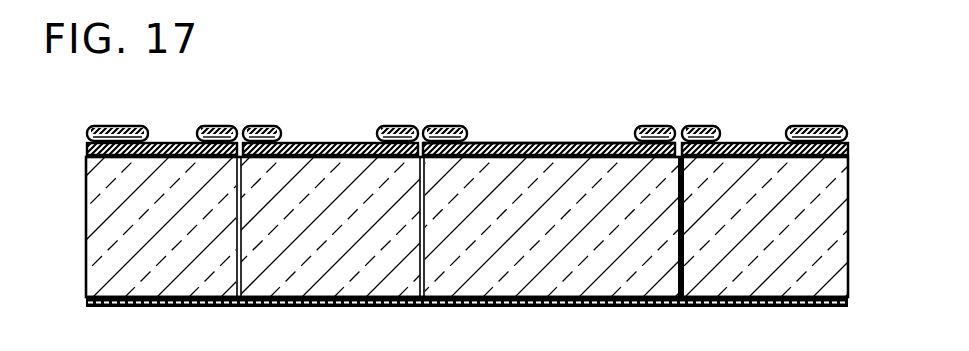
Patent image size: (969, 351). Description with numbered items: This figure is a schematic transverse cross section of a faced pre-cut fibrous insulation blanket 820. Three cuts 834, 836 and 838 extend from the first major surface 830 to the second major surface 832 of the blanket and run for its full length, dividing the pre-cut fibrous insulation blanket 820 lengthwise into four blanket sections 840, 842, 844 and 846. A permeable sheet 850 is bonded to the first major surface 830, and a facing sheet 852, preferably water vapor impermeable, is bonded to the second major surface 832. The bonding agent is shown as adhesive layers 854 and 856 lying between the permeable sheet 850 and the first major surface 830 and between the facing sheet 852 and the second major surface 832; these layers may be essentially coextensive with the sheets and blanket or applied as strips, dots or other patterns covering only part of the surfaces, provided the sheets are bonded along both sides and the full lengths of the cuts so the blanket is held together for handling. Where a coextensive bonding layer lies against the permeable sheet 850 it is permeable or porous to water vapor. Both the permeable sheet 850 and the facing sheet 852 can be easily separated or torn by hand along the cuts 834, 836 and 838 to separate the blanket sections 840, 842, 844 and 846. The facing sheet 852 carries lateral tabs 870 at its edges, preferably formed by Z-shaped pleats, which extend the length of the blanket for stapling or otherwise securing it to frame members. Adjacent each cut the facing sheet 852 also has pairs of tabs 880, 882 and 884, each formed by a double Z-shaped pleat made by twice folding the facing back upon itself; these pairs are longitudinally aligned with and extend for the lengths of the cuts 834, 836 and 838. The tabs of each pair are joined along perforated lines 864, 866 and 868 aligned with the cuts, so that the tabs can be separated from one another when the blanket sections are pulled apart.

The pre-cut fibrous insulation blanket 820 is at (617, 88).
The first major surface 830 is at (344, 299).
The second major surface 832 is at (602, 143).
The cut 834 is at (236, 278).
The cut 836 is at (421, 240).
The cut 838 is at (703, 274).
The blanket section 840 is at (186, 225).
The blanket section 842 is at (360, 225).
The blanket section 844 is at (517, 224).
The blanket section 846 is at (792, 225).
The permeable sheet 850 is at (754, 314).
The facing sheet 852 is at (556, 126).
The adhesive layer 854 is at (593, 297).
The adhesive layer 856 is at (500, 153).
The perforated line 864 is at (250, 126).
The perforated line 866 is at (428, 126).
The perforated line 868 is at (676, 127).
The lateral tab 870 is at (121, 128).
The pair of tabs 880 is at (274, 119).
The pair of tabs 882 is at (448, 112).
The pair of tabs 884 is at (714, 112).